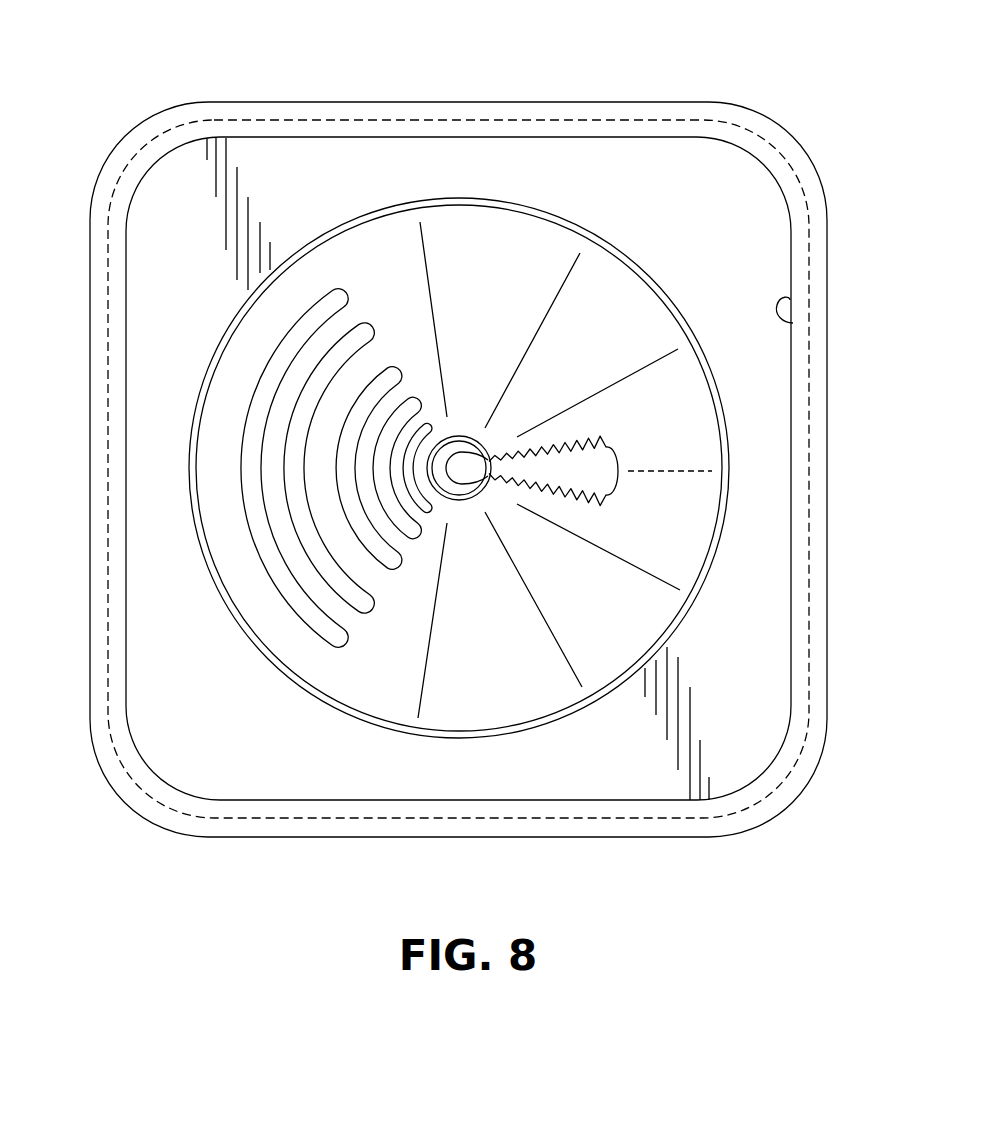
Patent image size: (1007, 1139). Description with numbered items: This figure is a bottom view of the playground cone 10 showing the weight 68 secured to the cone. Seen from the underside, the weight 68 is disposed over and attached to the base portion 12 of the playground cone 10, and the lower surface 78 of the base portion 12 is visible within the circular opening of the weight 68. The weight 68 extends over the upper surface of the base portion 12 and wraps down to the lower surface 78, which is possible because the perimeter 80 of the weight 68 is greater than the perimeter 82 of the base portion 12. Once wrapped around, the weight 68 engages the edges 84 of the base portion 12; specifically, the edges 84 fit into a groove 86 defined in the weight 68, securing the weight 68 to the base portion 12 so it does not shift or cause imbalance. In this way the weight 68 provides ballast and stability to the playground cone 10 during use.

The playground cone 10 is at (485, 421).
The base portion 12 is at (748, 215).
The weight 68 is at (141, 128).
The lower surface 78 is at (765, 523).
The perimeter 80 is at (792, 138).
The perimeter 82 is at (758, 617).
The edges 84 is at (810, 388).
The groove 86 is at (793, 323).